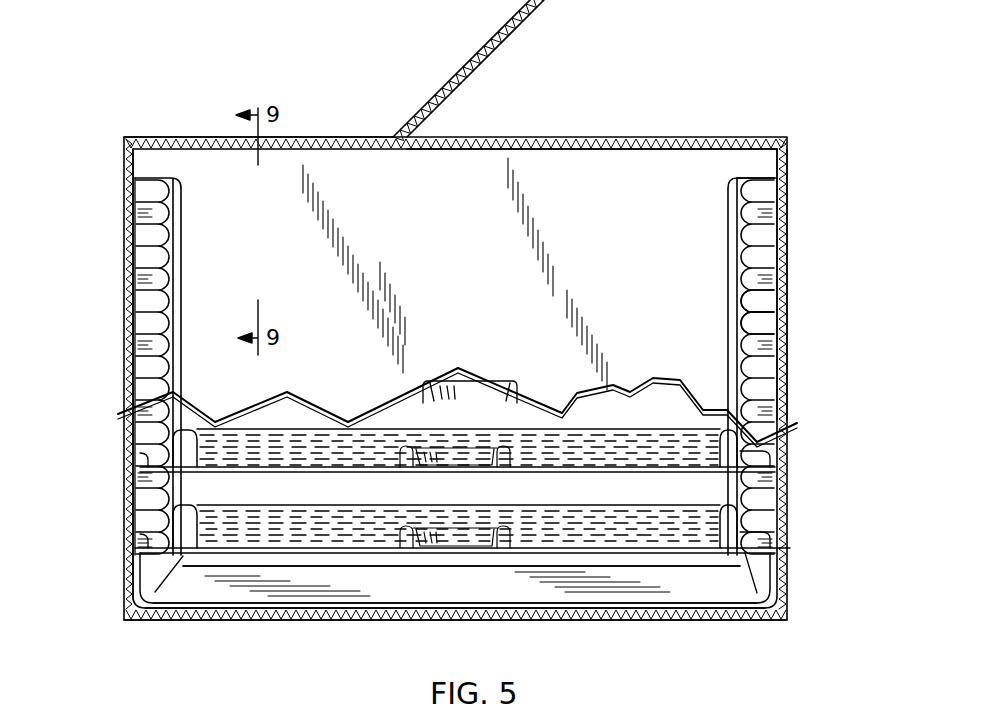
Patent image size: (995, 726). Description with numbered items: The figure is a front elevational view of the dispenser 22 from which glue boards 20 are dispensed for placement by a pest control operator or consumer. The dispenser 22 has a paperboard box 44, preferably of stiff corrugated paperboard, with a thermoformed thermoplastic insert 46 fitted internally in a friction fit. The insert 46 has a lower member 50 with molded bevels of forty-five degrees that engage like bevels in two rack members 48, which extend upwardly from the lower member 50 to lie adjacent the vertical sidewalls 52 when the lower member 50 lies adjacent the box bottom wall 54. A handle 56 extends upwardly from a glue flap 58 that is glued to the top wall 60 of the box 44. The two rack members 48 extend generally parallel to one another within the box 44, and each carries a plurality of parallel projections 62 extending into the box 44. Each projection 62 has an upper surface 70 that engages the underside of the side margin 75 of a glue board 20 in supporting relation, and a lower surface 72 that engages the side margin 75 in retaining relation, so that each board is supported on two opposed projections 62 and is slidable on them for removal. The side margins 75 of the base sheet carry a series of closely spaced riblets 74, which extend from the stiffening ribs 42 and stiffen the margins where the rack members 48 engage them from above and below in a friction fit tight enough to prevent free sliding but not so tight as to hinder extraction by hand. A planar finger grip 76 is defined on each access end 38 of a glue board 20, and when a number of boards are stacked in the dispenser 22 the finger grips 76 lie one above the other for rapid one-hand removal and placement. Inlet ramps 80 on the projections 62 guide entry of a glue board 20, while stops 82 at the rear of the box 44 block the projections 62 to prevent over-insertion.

The glue board 20 is at (358, 556).
The dispenser 22 is at (803, 324).
The access end 38 is at (634, 553).
The stiffening rib 42 is at (768, 482).
The box 44 is at (789, 178).
The insert 46 is at (789, 600).
The rack member 48 is at (728, 242).
The lower member 50 is at (420, 562).
The vertical sidewall 52 is at (783, 283).
The box bottom wall 54 is at (565, 620).
The handle 56 is at (456, 75).
The glue flap 58 is at (200, 137).
The top wall 60 is at (540, 137).
The projection 62 is at (170, 325).
The upper surface 70 is at (750, 302).
The lower surface 72 is at (748, 296).
The riblet 74 is at (762, 543).
The side margin 75 is at (140, 540).
The finger grip 76 is at (487, 542).
The inlet ramp 80 is at (735, 228).
The stop 82 is at (160, 233).